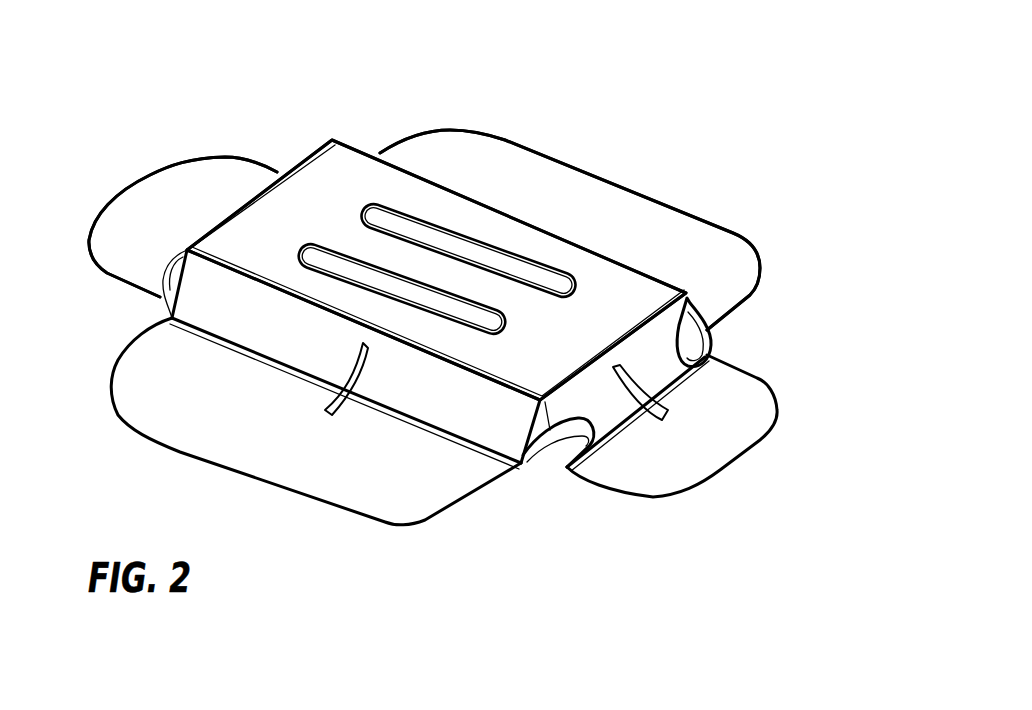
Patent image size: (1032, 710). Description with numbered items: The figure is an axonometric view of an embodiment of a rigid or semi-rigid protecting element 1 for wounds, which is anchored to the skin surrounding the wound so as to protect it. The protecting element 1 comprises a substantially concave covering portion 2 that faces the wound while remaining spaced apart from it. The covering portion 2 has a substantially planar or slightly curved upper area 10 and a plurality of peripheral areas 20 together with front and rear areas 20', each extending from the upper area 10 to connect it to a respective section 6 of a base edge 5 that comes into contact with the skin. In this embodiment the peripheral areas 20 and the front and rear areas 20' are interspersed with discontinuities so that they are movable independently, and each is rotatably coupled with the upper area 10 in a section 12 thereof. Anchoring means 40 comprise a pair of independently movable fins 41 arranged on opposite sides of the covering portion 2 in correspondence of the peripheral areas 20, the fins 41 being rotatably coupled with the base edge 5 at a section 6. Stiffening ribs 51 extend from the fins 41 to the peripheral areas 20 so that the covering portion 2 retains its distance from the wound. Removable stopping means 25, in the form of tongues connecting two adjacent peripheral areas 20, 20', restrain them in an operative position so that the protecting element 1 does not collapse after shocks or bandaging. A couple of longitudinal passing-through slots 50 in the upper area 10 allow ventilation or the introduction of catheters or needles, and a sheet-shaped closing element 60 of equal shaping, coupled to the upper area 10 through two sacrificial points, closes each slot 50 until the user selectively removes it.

The protecting element 1 is at (740, 78).
The covering portion 2 is at (355, 82).
The upper area 10 is at (609, 281).
The section 12 is at (299, 158).
The closing element 60 is at (400, 216).
The slot 50 is at (443, 220).
The stiffening rib 51 is at (344, 400).
The base edge 5 is at (160, 321).
The section 6 is at (712, 352).
The stopping means 25 is at (708, 333).
The anchoring means 40 is at (119, 161).
The fin 41 is at (182, 197).
The peripheral area 20 is at (316, 454).
The front and rear area 20' is at (672, 471).